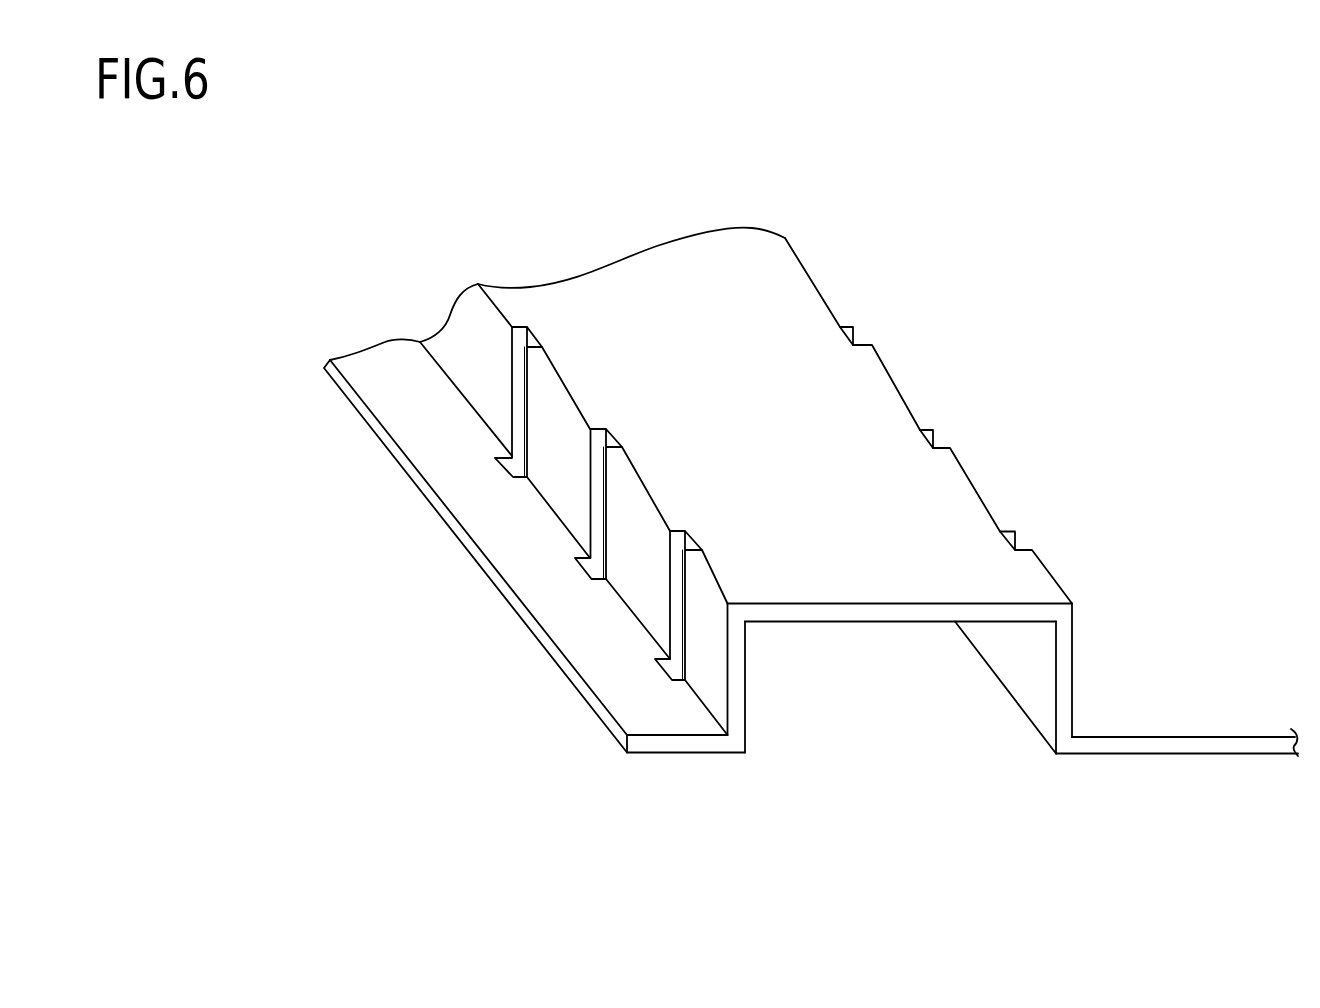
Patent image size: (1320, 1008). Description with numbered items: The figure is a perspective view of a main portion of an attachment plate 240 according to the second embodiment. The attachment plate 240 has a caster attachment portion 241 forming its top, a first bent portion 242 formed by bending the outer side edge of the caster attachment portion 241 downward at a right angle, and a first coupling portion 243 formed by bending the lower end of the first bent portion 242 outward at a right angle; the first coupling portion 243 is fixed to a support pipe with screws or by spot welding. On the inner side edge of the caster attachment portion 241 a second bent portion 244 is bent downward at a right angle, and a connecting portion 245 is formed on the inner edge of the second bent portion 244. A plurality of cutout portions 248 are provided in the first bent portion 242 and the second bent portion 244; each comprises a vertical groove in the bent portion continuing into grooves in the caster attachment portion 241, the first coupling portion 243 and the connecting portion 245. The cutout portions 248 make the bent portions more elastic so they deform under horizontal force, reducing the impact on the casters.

The attachment plate 240 is at (491, 240).
The caster attachment portion 241 is at (903, 622).
The first bent portion 242 is at (746, 703).
The first coupling portion 243 is at (660, 755).
The second bent portion 244 is at (1073, 685).
The connecting portion 245 is at (1173, 754).
The cutout portions 248 is at (512, 405).